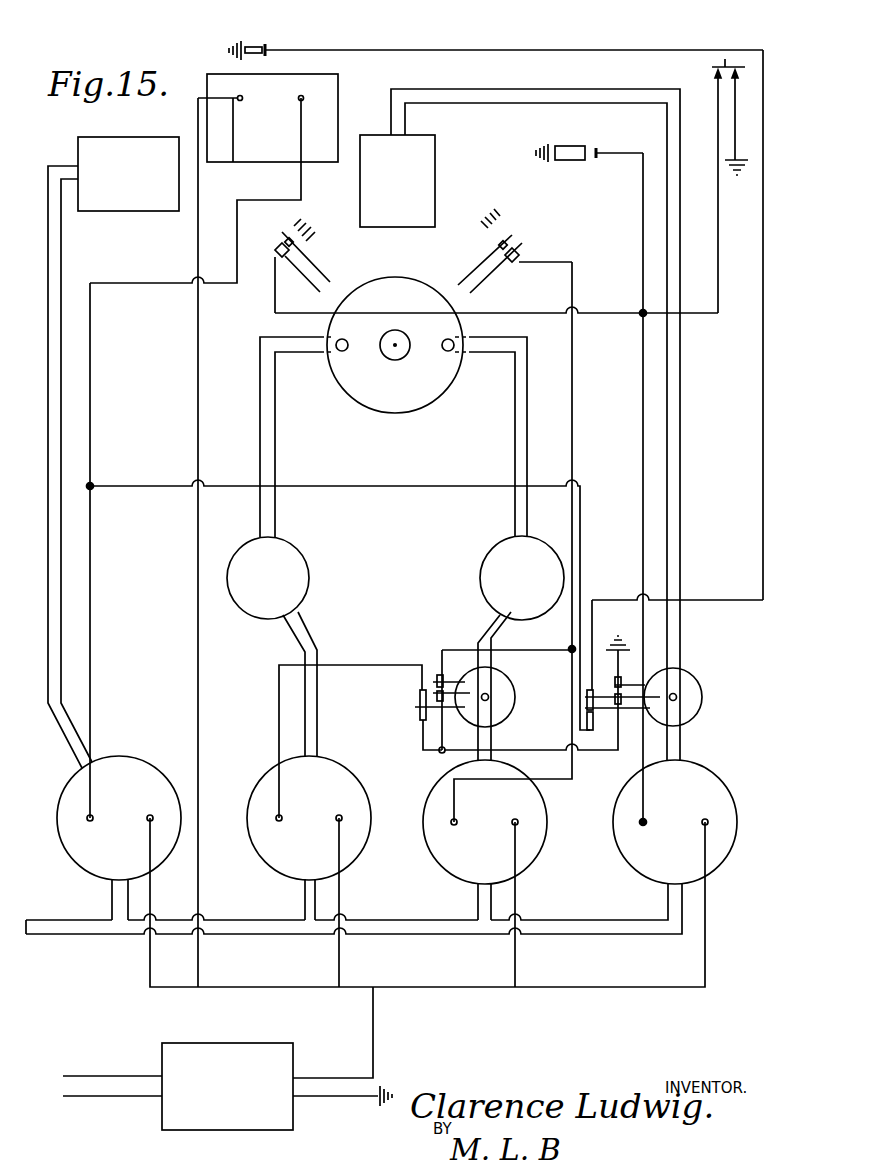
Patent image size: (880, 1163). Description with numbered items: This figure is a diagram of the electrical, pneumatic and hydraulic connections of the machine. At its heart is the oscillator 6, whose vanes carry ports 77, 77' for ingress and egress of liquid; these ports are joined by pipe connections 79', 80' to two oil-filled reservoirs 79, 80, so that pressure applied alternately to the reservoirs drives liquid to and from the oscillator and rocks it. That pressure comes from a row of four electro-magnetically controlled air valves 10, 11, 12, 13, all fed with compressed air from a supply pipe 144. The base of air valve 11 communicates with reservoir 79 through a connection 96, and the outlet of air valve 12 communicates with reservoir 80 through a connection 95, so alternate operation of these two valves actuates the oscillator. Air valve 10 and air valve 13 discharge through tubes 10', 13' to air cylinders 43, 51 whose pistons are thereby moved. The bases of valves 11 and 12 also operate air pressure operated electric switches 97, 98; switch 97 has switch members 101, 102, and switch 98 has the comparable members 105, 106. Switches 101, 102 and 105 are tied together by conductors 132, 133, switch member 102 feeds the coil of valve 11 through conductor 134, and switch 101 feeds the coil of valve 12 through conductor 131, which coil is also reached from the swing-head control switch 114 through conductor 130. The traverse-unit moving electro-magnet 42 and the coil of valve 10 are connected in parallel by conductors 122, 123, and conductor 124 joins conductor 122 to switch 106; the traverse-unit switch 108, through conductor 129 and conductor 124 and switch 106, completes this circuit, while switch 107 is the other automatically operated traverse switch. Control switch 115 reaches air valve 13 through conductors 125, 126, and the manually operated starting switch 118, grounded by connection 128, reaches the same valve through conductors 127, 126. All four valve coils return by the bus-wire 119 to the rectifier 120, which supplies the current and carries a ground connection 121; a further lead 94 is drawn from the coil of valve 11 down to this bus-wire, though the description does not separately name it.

The oscillator 6 is at (420, 404).
The air valve 10 is at (119, 838).
The tube 10' is at (70, 467).
The air valve 11 is at (309, 838).
The air valve 12 is at (485, 840).
The air valve 13 is at (675, 822).
The tube 13' is at (555, 424).
The electro-magnet 42 is at (272, 118).
The air cylinder 43 is at (128, 174).
The air cylinder 51 is at (397, 181).
The port 77 is at (338, 361).
The port 77' is at (447, 362).
The reservoir 79 is at (268, 578).
The pipe connection 79' is at (290, 437).
The reservoir 80 is at (522, 578).
The pipe connection 80' is at (498, 436).
The conductor 94 is at (342, 896).
The connection 95 is at (485, 626).
The connection 96 is at (308, 620).
The air pressure operated electric switch 97 is at (512, 686).
The air pressure operated electric switch 98 is at (702, 670).
The switch member 101 is at (438, 677).
The switch member 102 is at (420, 690).
The switch member 105 is at (614, 700).
The switch member 106 is at (594, 686).
The automatically-operated switch 107 is at (570, 160).
The automatically-operated switch 108 is at (258, 46).
The control switch 114 is at (510, 266).
The control switch 115 is at (276, 252).
The starting switch 118 is at (712, 69).
The bus-wire 119 is at (604, 988).
The rectifier 120 is at (220, 1086).
The ground connection 121 is at (332, 1100).
The conductor 122 is at (92, 606).
The conductor 123 is at (196, 556).
The conductor 124 is at (393, 486).
The conductor 125 is at (616, 311).
The conductor 126 is at (641, 407).
The conductor 127 is at (716, 230).
The ground connection 128 is at (737, 126).
The conductor 129 is at (760, 416).
The conductor 130 is at (575, 446).
The conductor 131 is at (537, 650).
The conductor 132 is at (595, 752).
The conductor 133 is at (443, 736).
The conductor 134 is at (278, 727).
The supply pipe 144 is at (68, 938).